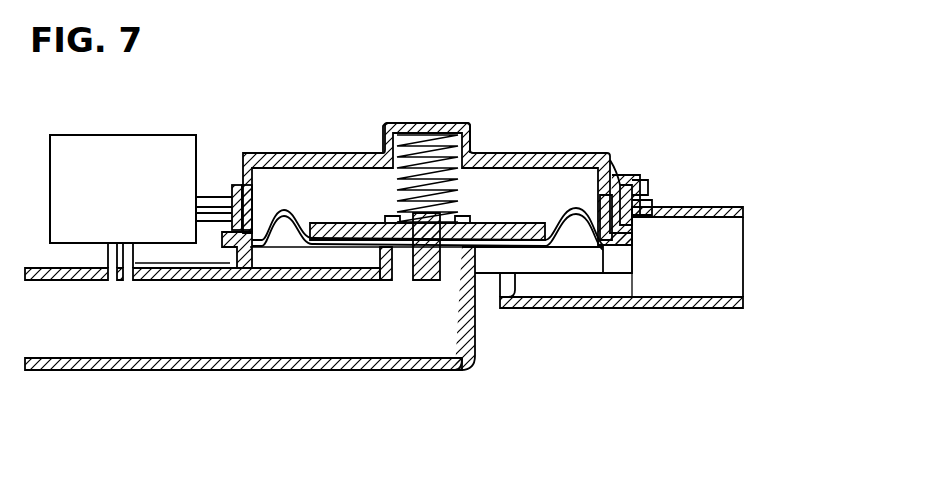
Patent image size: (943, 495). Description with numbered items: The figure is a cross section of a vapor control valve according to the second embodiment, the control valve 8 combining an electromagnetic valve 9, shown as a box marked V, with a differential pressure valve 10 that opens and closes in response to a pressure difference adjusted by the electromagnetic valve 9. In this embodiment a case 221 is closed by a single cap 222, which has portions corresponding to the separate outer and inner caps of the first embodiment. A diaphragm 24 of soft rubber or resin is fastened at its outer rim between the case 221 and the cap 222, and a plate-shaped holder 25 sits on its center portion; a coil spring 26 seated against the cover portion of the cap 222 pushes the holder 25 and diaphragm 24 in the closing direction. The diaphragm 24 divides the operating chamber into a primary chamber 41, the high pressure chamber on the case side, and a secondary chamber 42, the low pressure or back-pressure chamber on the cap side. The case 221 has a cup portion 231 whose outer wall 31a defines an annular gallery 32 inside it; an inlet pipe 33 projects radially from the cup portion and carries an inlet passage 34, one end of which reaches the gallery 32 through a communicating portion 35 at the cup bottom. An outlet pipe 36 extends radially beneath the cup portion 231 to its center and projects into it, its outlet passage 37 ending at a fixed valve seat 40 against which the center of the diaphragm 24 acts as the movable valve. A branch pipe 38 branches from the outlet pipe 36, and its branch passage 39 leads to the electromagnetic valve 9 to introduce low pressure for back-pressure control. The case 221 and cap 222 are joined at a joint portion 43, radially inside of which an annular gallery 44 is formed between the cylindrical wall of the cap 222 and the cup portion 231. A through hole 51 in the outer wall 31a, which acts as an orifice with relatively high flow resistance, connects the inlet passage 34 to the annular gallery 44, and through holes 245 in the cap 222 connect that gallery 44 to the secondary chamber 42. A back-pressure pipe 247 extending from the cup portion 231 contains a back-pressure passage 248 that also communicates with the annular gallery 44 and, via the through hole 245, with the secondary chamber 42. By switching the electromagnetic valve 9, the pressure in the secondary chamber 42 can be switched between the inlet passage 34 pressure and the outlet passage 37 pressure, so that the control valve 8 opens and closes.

The control valve 8 is at (714, 124).
The electromagnetic valve 9 is at (116, 135).
The differential pressure valve 10 is at (438, 123).
The diaphragm 24 is at (556, 205).
The holder 25 is at (500, 222).
The coil spring 26 is at (405, 150).
The outer wall 31a is at (635, 258).
The gallery 32 is at (530, 255).
The inlet pipe 33 is at (718, 310).
The inlet passage 34 is at (685, 258).
The communicating portion 35 is at (570, 250).
The outlet pipe 36 is at (245, 370).
The outlet passage 37 is at (305, 318).
The branch pipe 38 is at (108, 270).
The branch passage 39 is at (125, 272).
The fixed valve seat 40 is at (440, 245).
The primary chamber 41 is at (608, 178).
The secondary chamber 42 is at (583, 210).
The joint portion 43 is at (647, 188).
The annular gallery 44 is at (652, 207).
The through hole 51 is at (645, 248).
The case 221 is at (716, 207).
The cap 222 is at (478, 140).
The cup portion 231 is at (225, 240).
The through hole 245 is at (628, 188).
The back-pressure pipe 247 is at (222, 185).
The back-pressure passage 248 is at (242, 200).